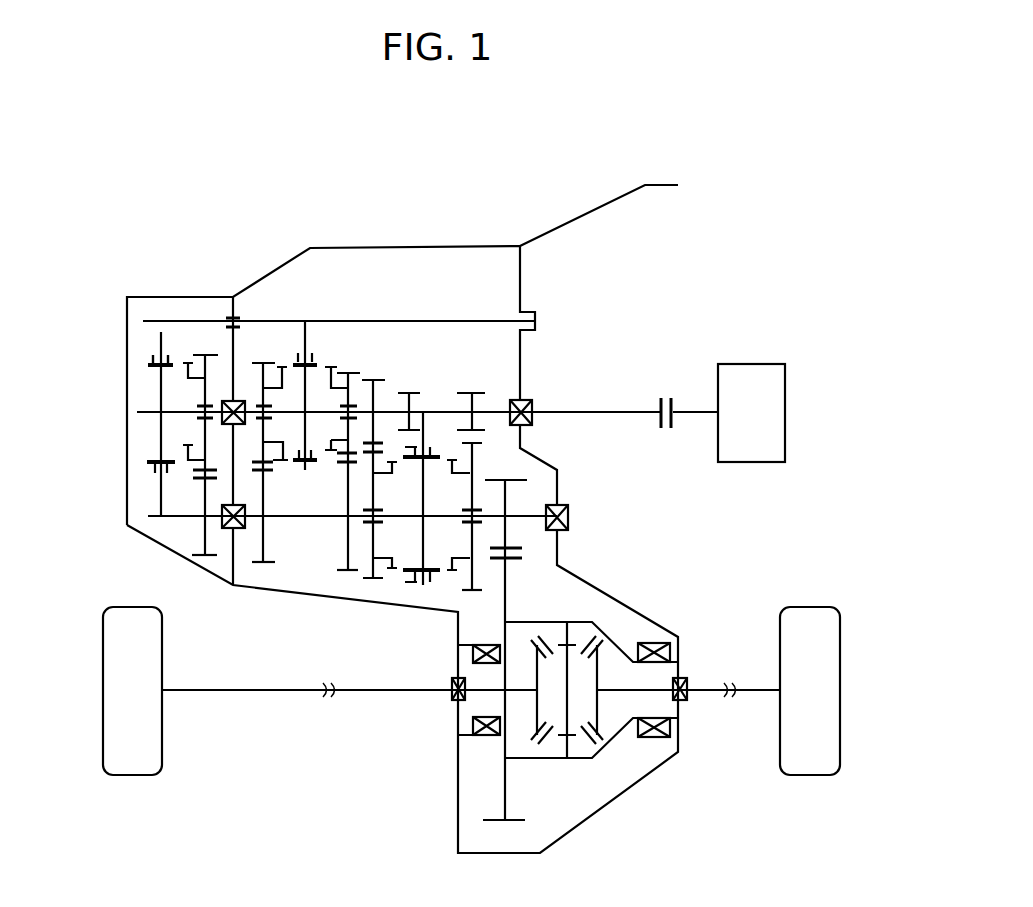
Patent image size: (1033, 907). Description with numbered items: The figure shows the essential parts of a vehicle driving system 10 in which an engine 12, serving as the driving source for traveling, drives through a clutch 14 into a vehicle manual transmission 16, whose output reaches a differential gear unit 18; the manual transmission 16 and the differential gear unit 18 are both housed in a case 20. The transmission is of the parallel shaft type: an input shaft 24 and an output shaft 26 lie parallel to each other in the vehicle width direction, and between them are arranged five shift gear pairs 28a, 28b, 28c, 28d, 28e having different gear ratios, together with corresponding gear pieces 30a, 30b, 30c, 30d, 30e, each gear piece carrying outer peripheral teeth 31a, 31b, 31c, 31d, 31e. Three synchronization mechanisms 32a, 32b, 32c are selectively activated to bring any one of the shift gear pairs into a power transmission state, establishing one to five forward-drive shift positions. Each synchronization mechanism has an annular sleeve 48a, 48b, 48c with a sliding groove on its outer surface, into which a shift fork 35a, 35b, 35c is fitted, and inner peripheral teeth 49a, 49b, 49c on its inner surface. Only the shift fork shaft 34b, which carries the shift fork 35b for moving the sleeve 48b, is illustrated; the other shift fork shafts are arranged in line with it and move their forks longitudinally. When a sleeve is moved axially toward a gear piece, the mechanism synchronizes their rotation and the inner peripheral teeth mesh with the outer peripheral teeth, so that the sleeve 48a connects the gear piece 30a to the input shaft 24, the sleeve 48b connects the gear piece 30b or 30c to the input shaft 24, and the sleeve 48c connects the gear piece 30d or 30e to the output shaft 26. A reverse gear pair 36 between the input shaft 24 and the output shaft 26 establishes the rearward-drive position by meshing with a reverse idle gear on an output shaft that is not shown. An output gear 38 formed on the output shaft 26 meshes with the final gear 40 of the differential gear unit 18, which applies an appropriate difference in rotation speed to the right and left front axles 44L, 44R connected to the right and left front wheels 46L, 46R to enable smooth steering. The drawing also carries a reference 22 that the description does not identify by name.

The vehicle driving system 10 is at (752, 185).
The engine 12 is at (733, 370).
The clutch 14 is at (657, 392).
The vehicle manual transmission 16 is at (512, 212).
The differential gear unit 18 is at (580, 795).
The case 20 is at (432, 442).
The transmission 22 is at (195, 210).
The input shaft 24 is at (572, 410).
The output shaft 26 is at (172, 520).
The shift gear pair 28a is at (200, 345).
The shift gear pair 28b is at (263, 582).
The shift gear pair 28c is at (345, 585).
The shift gear pair 28d is at (372, 365).
The shift gear pair 28e is at (495, 383).
The gear piece 30a is at (170, 478).
The gear piece 30b is at (282, 348).
The gear piece 30c is at (327, 352).
The gear piece 30d is at (408, 595).
The gear piece 30e is at (465, 600).
The outer peripheral teeth 31a is at (184, 462).
The outer peripheral teeth 31b is at (280, 367).
The outer peripheral teeth 31c is at (330, 465).
The outer peripheral teeth 31d is at (397, 585).
The outer peripheral teeth 31e is at (453, 592).
The synchronization mechanism 32a is at (148, 362).
The synchronization mechanism 32b is at (292, 340).
The synchronization mechanism 32c is at (415, 598).
The shift fork shaft 34b is at (160, 332).
The shift fork 35a is at (147, 353).
The shift fork 35b is at (310, 345).
The shift fork 35c is at (420, 440).
The reverse gear pair 36 is at (409, 383).
The output gear 38 is at (518, 480).
The final gear 40 is at (518, 825).
The left front axle 44L is at (250, 693).
The right front axle 44R is at (708, 693).
The left front wheel 46L is at (137, 760).
The right front wheel 46R is at (808, 760).
The sleeve 48a is at (147, 470).
The sleeve 48b is at (292, 478).
The sleeve 48c is at (443, 452).
The inner peripheral teeth 49a is at (155, 368).
The inner peripheral teeth 49b is at (312, 455).
The inner peripheral teeth 49c is at (413, 463).